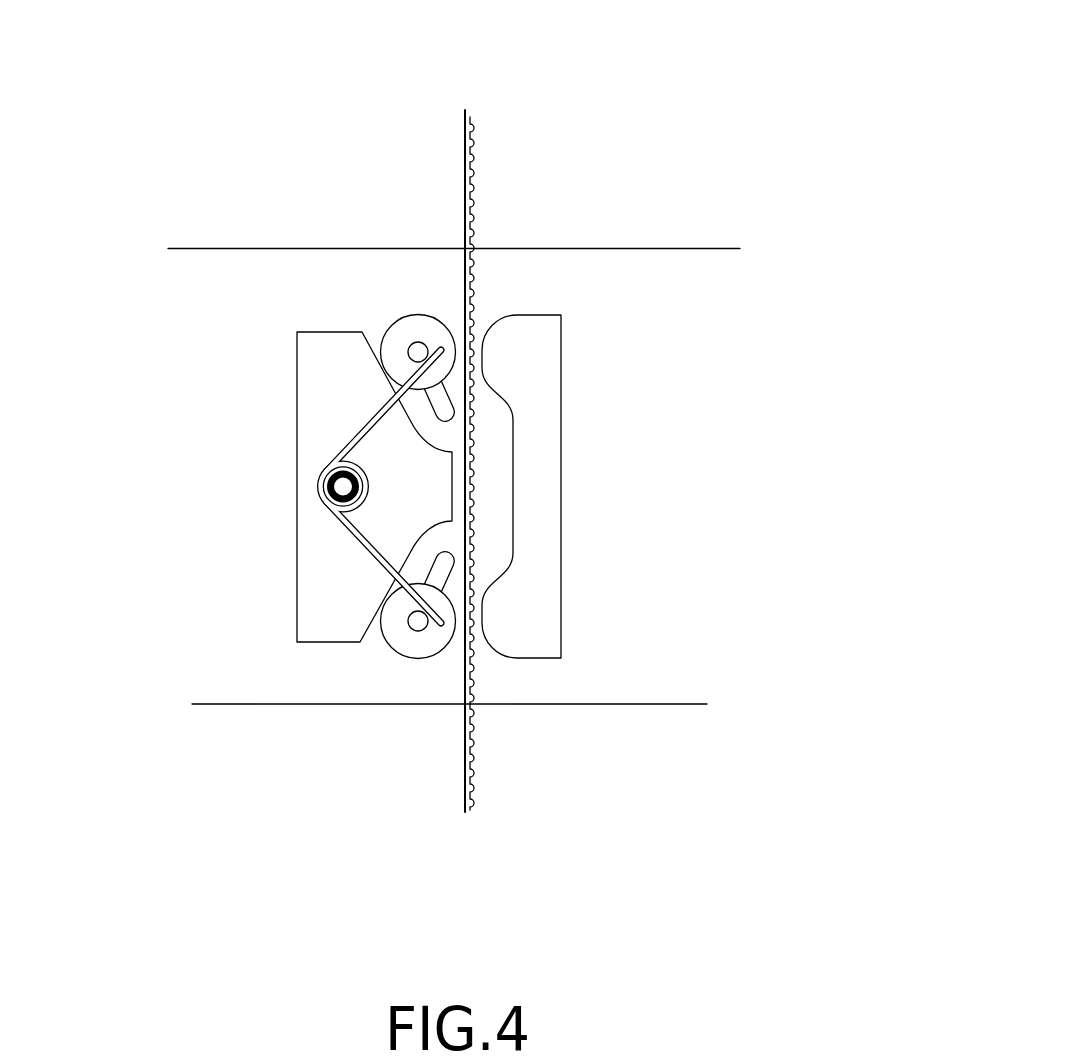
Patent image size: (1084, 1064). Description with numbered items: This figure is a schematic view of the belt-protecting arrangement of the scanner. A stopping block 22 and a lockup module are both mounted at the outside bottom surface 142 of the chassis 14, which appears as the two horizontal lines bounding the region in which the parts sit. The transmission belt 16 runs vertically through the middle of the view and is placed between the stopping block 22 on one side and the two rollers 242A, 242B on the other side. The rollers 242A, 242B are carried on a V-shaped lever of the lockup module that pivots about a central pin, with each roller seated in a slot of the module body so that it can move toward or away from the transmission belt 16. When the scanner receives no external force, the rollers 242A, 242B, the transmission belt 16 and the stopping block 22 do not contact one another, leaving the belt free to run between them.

The chassis 14 is at (603, 706).
The outside bottom surface 142 is at (665, 292).
The transmission belt 16 is at (466, 148).
The stopping block 22 is at (549, 489).
The roller 242A is at (398, 332).
The roller 242B is at (398, 648).